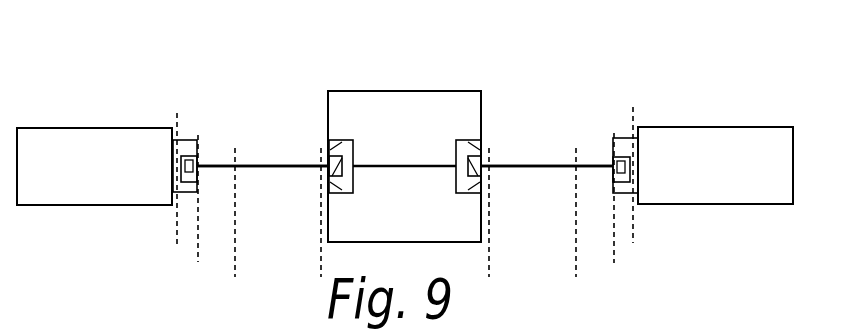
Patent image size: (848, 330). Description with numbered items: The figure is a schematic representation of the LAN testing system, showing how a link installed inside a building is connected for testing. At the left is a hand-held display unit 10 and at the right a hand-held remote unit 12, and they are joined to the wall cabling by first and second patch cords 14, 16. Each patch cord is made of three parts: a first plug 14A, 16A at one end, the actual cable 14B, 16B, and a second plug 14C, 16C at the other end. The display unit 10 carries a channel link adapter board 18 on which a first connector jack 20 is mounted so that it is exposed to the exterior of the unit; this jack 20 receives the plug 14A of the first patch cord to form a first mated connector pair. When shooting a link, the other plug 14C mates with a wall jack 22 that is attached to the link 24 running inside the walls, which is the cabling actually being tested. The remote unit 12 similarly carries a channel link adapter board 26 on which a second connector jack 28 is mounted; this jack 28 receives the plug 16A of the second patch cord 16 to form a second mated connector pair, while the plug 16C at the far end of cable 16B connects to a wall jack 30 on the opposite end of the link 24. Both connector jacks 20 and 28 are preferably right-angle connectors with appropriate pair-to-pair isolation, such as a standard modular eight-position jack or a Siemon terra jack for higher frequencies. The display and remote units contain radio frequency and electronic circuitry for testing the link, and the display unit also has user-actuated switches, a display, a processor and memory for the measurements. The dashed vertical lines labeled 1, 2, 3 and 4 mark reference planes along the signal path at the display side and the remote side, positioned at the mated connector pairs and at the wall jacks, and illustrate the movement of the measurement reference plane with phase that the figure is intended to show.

The hand-held display unit 10 is at (46, 127).
The hand-held remote unit 12 is at (782, 126).
The first patch cord 14 is at (263, 158).
The first plug of first patch cord 14A is at (210, 148).
The cable of first patch cord 14B is at (298, 168).
The second plug of first patch cord 14C is at (315, 138).
The second patch cord 16 is at (542, 157).
The first plug of second patch cord 16A is at (598, 140).
The cable of second patch cord 16B is at (530, 168).
The second plug of second patch cord 16C is at (493, 142).
The channel link adapter board 18 is at (183, 114).
The first connector jack 20 is at (198, 177).
The wall jack 22 is at (338, 140).
The link 24 is at (412, 163).
The channel link adapter board 26 is at (630, 135).
The second connector jack 28 is at (615, 173).
The wall jack 30 is at (473, 136).
The section plane 1 is at (406, 177).
The section plane 2 is at (406, 208).
The section plane 3 is at (405, 215).
The section plane 4 is at (406, 215).